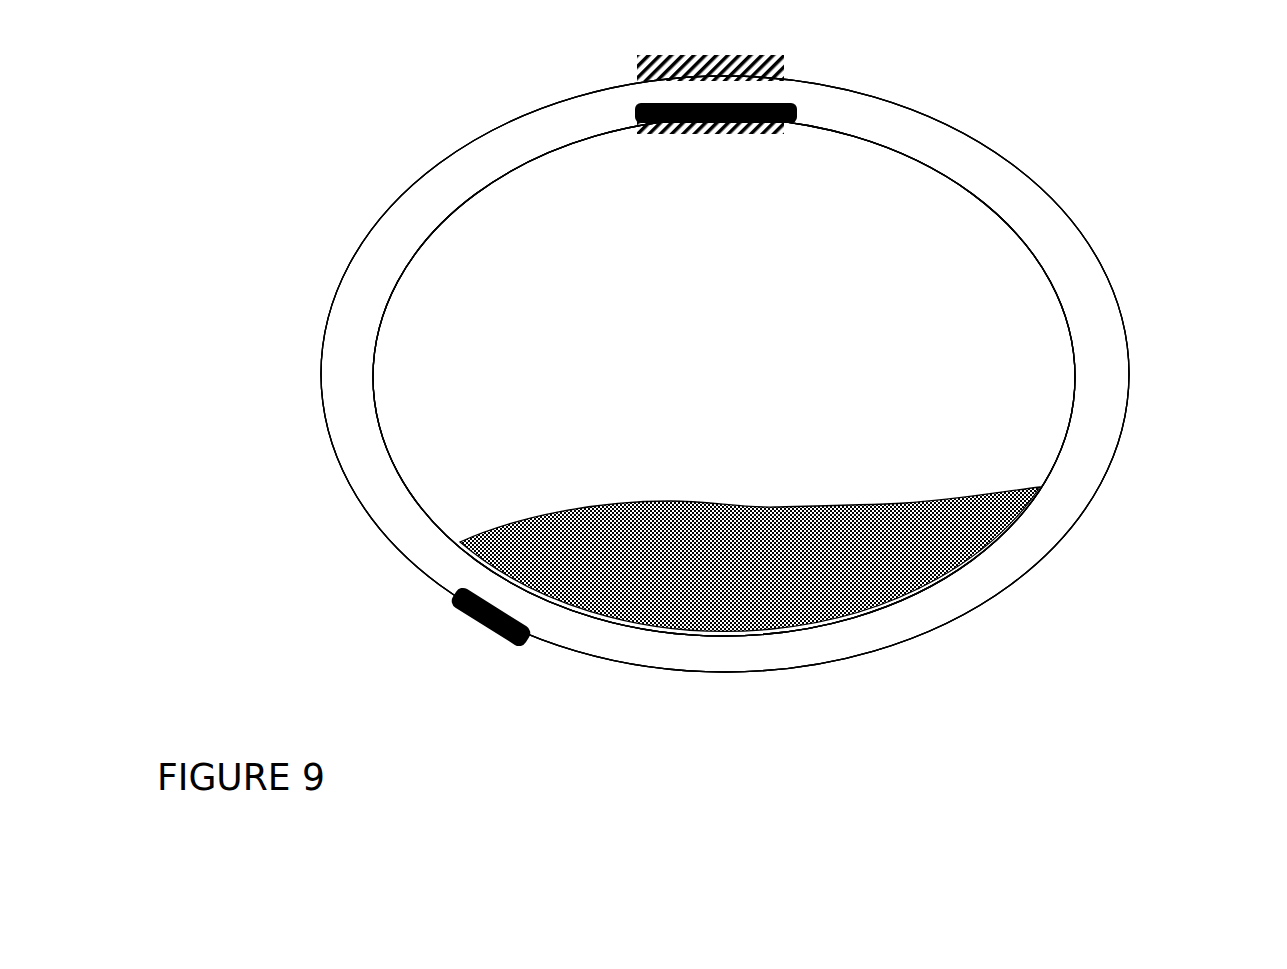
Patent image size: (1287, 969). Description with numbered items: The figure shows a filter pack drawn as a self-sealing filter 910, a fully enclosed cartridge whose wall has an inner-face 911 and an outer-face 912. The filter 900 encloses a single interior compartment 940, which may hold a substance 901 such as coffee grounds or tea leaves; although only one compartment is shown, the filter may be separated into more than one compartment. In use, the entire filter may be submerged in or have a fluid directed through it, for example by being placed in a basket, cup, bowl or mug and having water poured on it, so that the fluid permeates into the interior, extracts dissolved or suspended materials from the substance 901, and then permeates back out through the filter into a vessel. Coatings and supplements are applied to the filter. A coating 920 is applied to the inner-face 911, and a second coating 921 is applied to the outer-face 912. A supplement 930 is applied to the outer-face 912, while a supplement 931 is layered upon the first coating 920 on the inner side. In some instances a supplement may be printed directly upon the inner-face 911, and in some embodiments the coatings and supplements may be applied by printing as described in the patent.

The filter 900 is at (740, 697).
The substance 901 is at (997, 505).
The self-sealing filter 910 is at (1093, 303).
The inner-face 911 is at (1073, 393).
The outer-face 912 is at (1120, 438).
The coating 920 is at (797, 108).
The second coating 921 is at (488, 630).
The supplement 930 is at (784, 60).
The supplement 931 is at (797, 117).
The interior compartment 940 is at (958, 278).